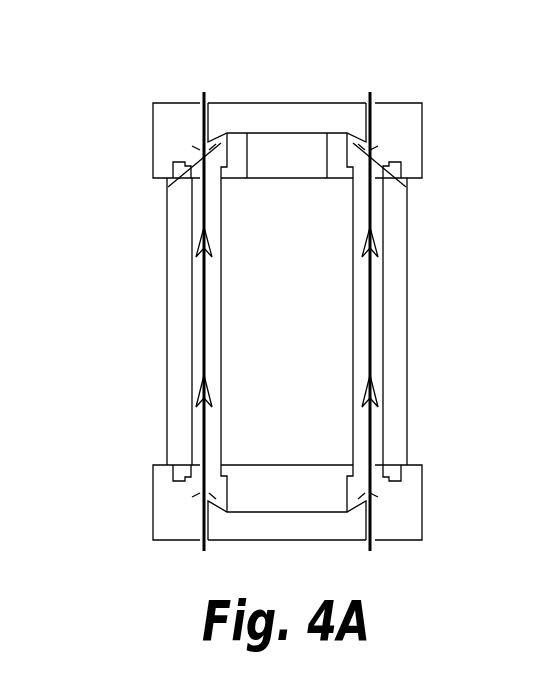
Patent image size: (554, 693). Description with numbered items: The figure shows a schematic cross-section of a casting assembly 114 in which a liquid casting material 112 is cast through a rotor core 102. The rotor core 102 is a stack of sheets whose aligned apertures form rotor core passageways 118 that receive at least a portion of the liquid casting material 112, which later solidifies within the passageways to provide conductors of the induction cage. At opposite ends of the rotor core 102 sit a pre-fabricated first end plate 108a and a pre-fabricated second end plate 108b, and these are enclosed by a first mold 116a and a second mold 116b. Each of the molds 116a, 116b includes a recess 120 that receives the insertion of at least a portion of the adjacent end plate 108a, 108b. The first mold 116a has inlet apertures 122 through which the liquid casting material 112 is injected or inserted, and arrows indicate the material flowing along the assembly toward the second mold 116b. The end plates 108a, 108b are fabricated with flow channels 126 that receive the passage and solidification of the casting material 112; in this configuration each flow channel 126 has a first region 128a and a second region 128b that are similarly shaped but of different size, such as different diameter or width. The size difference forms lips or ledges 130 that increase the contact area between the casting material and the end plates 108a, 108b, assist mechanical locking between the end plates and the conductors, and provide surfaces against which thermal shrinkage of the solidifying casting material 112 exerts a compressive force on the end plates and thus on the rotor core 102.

The rotor core 102 is at (395, 392).
The first end plate 108a is at (266, 475).
The second end plate 108b is at (358, 141).
The liquid casting material 112 is at (172, 330).
The casting assembly 114 is at (130, 60).
The first mold 116a is at (411, 527).
The second mold 116b is at (412, 118).
The rotor core passageway 118 is at (192, 273).
The recess 120 is at (282, 142).
The inlet aperture 122 is at (200, 522).
The flow channel 126 is at (200, 150).
The first region 128a is at (223, 137).
The second region 128b is at (168, 187).
The lips or ledges 130 is at (182, 162).